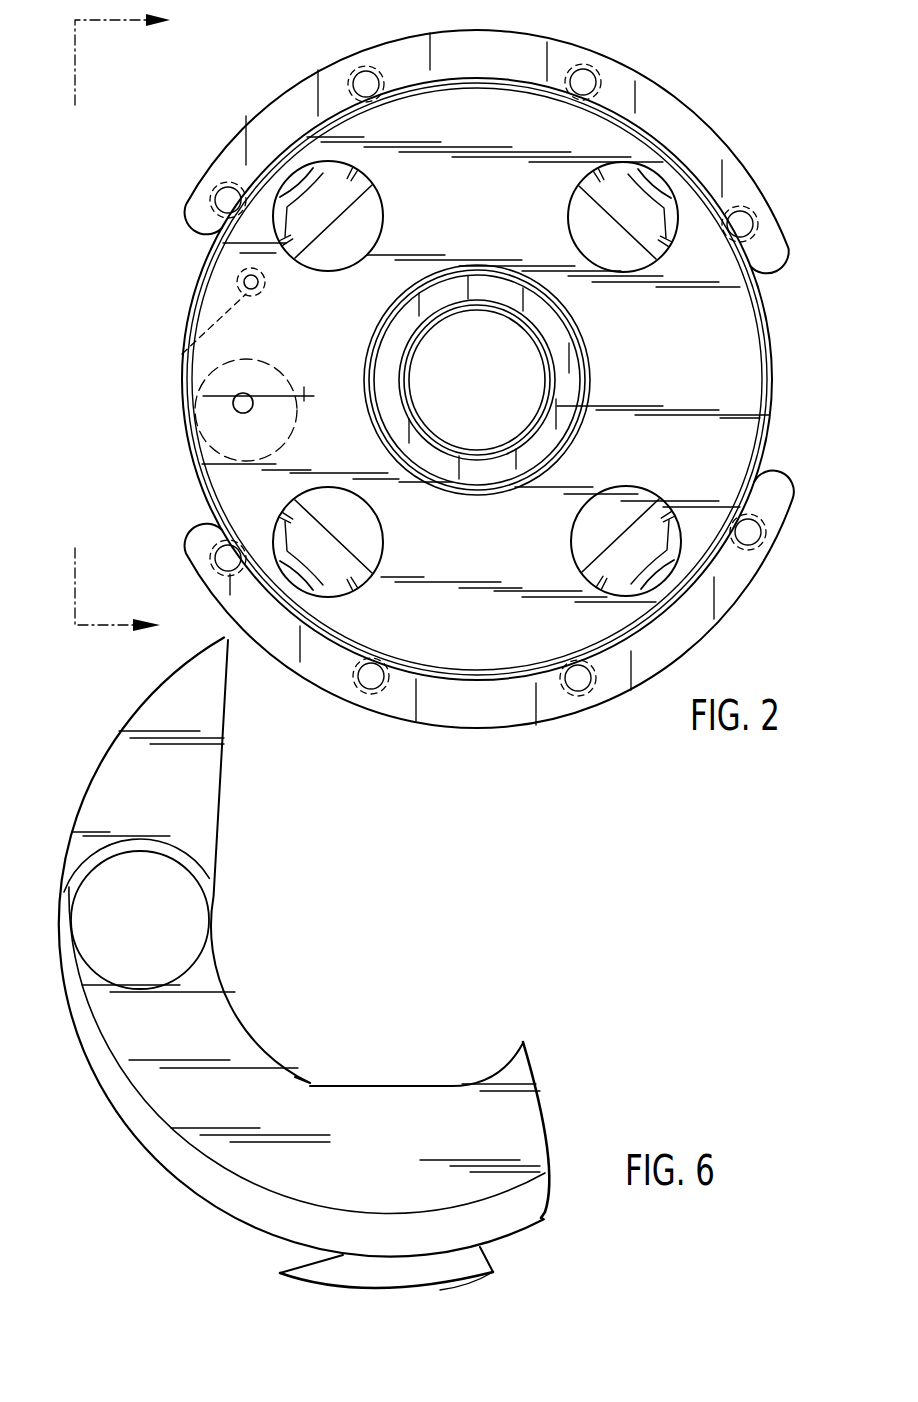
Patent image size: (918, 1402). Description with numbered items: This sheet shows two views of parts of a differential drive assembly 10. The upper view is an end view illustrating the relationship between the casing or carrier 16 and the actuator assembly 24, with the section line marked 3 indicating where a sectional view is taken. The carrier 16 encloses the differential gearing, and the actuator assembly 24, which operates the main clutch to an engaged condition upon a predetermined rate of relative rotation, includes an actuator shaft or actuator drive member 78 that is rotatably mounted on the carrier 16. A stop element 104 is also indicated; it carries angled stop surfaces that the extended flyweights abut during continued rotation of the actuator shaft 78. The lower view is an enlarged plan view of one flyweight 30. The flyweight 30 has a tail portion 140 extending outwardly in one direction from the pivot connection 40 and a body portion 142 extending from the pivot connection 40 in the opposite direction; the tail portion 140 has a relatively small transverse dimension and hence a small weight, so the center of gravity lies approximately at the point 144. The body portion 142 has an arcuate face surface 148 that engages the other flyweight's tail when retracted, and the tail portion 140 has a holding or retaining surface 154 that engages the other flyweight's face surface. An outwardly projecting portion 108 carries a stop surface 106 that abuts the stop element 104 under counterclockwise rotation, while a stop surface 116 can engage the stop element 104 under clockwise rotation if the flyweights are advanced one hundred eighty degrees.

In FIG. 2, the differential drive assembly 10 is at (778, 118).
In FIG. 2, the casing or carrier 16 is at (758, 398).
In FIG. 2, the actuator assembly 24 is at (168, 423).
In FIG. 2, the actuator shaft or actuator drive member 78 is at (241, 413).
In FIG. 2, the stop element 104 is at (244, 295).
In FIG. 2, the section line 3- 3 is at (131, 320).
In FIG. 6, the flyweight 30 is at (178, 1154).
In FIG. 6, the pivot connection 40 is at (163, 915).
In FIG. 6, the holding or retaining surface 154 is at (226, 722).
In FIG. 6, the tail portion 140 is at (174, 757).
In FIG. 6, the body portion 142 is at (375, 1081).
In FIG. 6, the center of gravity 144 is at (368, 1165).
In FIG. 6, the arcuate face surface 148 is at (543, 1112).
In FIG. 6, the stop surface 116 is at (300, 1268).
In FIG. 6, the stop surface 106 is at (489, 1258).
In FIG. 6, the outwardly projecting portion 108 is at (447, 1291).